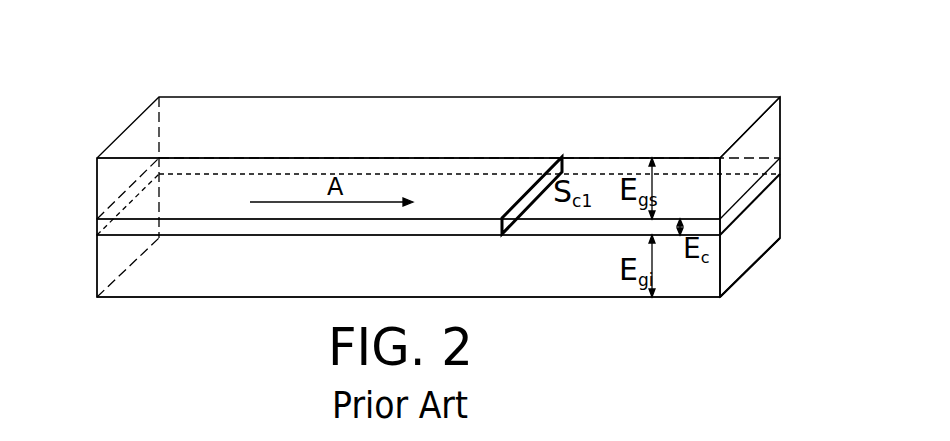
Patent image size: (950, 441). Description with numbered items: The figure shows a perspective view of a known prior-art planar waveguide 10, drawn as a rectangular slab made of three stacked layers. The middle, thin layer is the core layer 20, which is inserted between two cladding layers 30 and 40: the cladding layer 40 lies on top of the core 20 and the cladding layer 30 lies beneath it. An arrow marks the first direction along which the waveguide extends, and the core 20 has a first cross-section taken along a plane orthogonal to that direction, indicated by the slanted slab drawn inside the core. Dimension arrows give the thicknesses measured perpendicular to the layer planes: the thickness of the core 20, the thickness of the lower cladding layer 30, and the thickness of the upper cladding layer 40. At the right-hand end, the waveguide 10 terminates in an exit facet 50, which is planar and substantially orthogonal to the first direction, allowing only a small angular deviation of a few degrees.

The planar waveguide 10 is at (118, 68).
The core layer 20 is at (97, 230).
The cladding layer 30 is at (97, 268).
The cladding layer 40 is at (97, 159).
The exit facet 50 is at (780, 166).